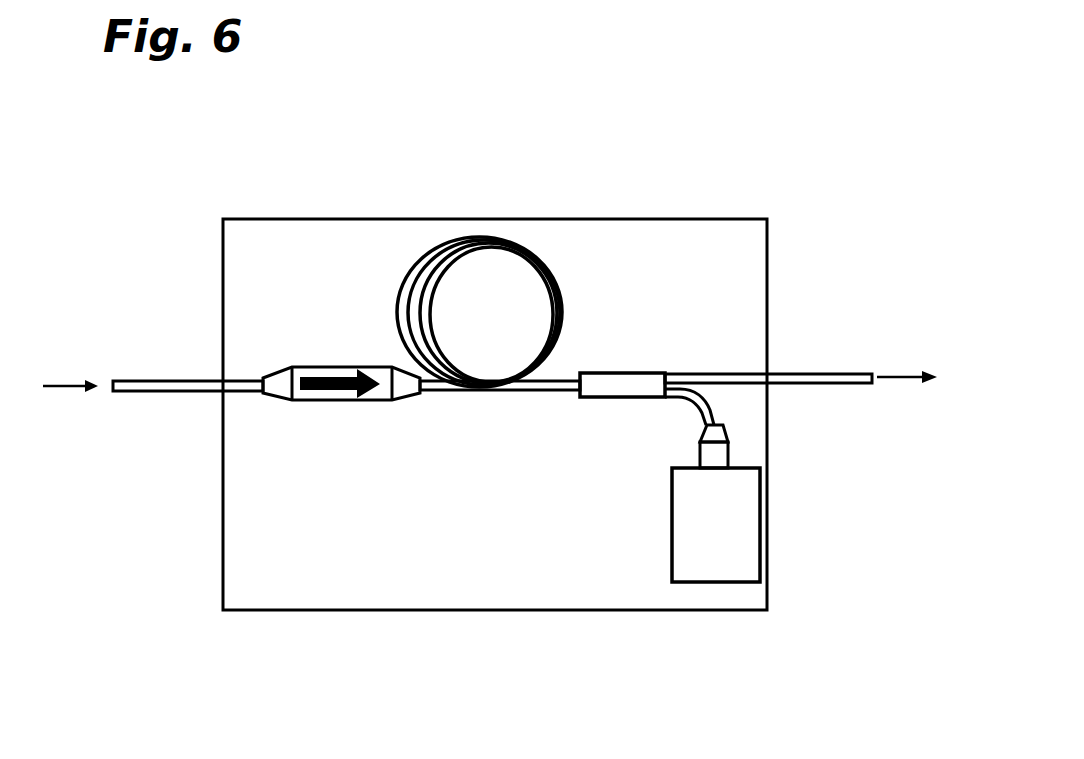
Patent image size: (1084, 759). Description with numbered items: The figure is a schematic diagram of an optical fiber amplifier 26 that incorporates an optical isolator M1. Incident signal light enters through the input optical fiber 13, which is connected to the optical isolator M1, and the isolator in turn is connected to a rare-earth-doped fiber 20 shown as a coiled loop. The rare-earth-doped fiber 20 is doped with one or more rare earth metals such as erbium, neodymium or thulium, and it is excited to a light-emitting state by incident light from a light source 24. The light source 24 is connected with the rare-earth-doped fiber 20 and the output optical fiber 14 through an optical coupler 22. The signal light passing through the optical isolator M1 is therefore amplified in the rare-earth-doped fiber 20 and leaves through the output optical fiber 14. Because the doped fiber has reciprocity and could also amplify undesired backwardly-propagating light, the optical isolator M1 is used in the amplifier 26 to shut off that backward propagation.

The input optical fiber 13 is at (163, 380).
The output optical fiber 14 is at (807, 381).
The rare-earth-doped fiber 20 is at (472, 240).
The optical coupler 22 is at (627, 373).
The light source 24 is at (737, 528).
The optical fiber amplifier 26 is at (357, 611).
The optical isolator M1 is at (318, 399).